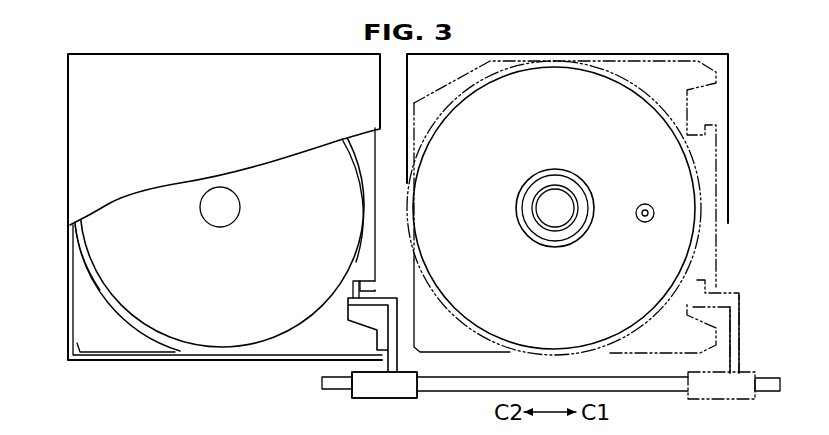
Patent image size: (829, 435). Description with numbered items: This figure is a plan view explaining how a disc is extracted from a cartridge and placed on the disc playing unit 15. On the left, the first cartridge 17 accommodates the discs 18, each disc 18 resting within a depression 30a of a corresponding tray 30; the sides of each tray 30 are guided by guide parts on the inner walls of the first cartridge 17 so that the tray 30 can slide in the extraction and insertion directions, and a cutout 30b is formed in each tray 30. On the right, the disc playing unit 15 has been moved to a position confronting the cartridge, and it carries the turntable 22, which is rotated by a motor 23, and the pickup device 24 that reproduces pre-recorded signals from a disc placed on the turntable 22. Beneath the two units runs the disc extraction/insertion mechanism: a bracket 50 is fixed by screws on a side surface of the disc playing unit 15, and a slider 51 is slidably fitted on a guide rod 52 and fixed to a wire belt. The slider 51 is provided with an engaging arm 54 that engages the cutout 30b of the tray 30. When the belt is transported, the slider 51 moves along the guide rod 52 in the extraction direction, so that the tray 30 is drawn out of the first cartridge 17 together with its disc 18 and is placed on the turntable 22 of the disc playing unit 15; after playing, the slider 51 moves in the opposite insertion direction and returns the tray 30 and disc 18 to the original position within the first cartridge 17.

The disc playing unit 15 is at (728, 98).
The first cartridge 17 is at (177, 54).
The discs 18 is at (222, 350).
The turntable 22 is at (545, 182).
The motor 23 is at (588, 179).
The pickup device 24 is at (645, 204).
The tray 30 is at (83, 316).
The depression 30a is at (96, 274).
The cutout 30b is at (367, 281).
The bracket 50 is at (421, 398).
The slider 51 is at (367, 398).
The guide rod 52 is at (632, 385).
The engaging arm 54 is at (355, 297).